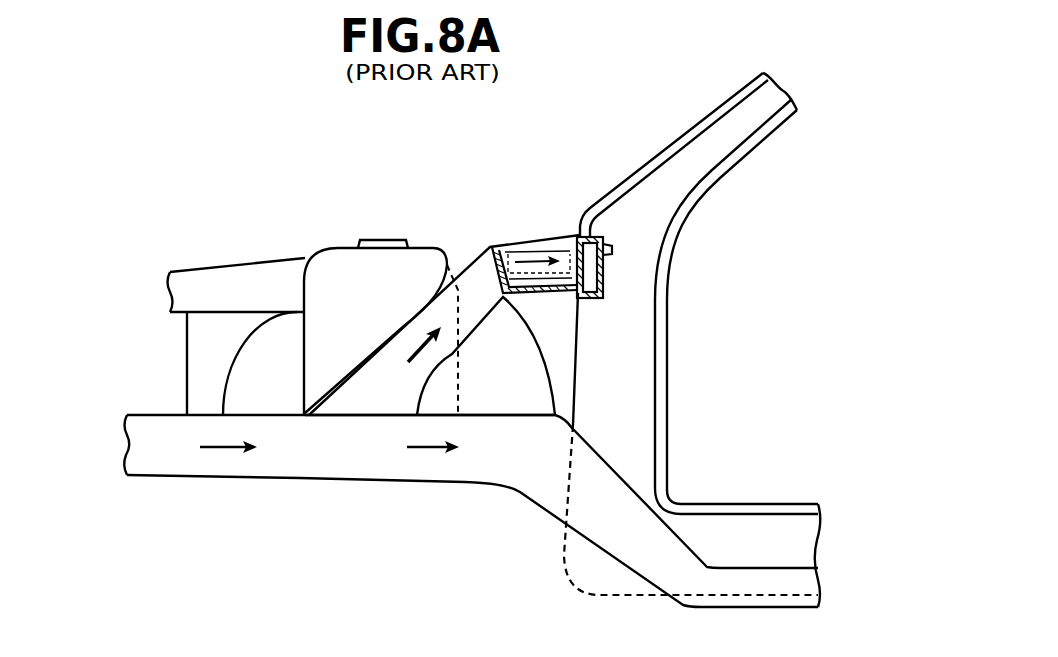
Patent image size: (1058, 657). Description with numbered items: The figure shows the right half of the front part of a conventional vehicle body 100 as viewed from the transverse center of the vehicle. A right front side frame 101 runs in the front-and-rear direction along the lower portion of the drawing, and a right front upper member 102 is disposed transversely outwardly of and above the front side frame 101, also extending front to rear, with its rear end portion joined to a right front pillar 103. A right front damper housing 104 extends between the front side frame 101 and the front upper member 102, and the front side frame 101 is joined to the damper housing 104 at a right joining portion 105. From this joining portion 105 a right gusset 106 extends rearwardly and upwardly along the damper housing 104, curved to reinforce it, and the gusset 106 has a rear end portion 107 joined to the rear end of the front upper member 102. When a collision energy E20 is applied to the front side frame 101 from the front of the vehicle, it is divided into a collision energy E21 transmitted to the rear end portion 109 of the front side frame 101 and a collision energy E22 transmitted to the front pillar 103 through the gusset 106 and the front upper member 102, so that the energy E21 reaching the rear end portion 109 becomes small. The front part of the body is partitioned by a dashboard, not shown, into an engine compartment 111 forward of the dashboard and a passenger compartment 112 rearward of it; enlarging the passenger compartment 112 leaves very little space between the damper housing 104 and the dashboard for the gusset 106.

The vehicle body 100 is at (240, 94).
The front side frame 101 is at (246, 512).
The front upper member 102 is at (224, 229).
The front pillar 103 is at (673, 175).
The front damper housing 104 is at (347, 262).
The joining portion 105 is at (335, 415).
The gusset 106 is at (361, 398).
The rear end portion of gusset 107 is at (463, 257).
The rear end portion of front side frame 109 is at (580, 492).
The collision energy E20 is at (197, 446).
The collision energy E21 is at (466, 447).
The collision energy E22 is at (436, 347).
The engine compartment 111 is at (123, 375).
The passenger compartment 112 is at (873, 405).